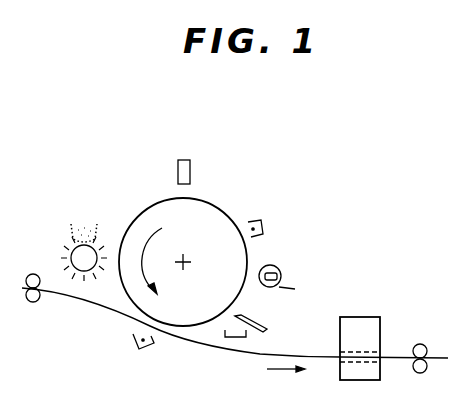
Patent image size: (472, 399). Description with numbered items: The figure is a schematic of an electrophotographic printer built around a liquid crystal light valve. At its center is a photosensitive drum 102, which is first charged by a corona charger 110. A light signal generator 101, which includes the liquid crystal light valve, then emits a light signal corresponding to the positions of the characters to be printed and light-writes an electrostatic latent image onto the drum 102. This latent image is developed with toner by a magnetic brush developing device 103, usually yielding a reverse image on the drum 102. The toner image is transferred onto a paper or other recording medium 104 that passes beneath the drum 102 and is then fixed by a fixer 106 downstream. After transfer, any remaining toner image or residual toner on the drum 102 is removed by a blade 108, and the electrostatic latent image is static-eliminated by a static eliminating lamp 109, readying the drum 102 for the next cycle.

The light signal generator 101 is at (190, 170).
The photosensitive drum 102 is at (236, 212).
The magnetic brush developing device 103 is at (82, 224).
The recording medium 104 is at (93, 302).
The fixer 106 is at (372, 323).
The blade 108 is at (262, 322).
The static eliminating lamp 109 is at (280, 271).
The corona charger 110 is at (263, 228).